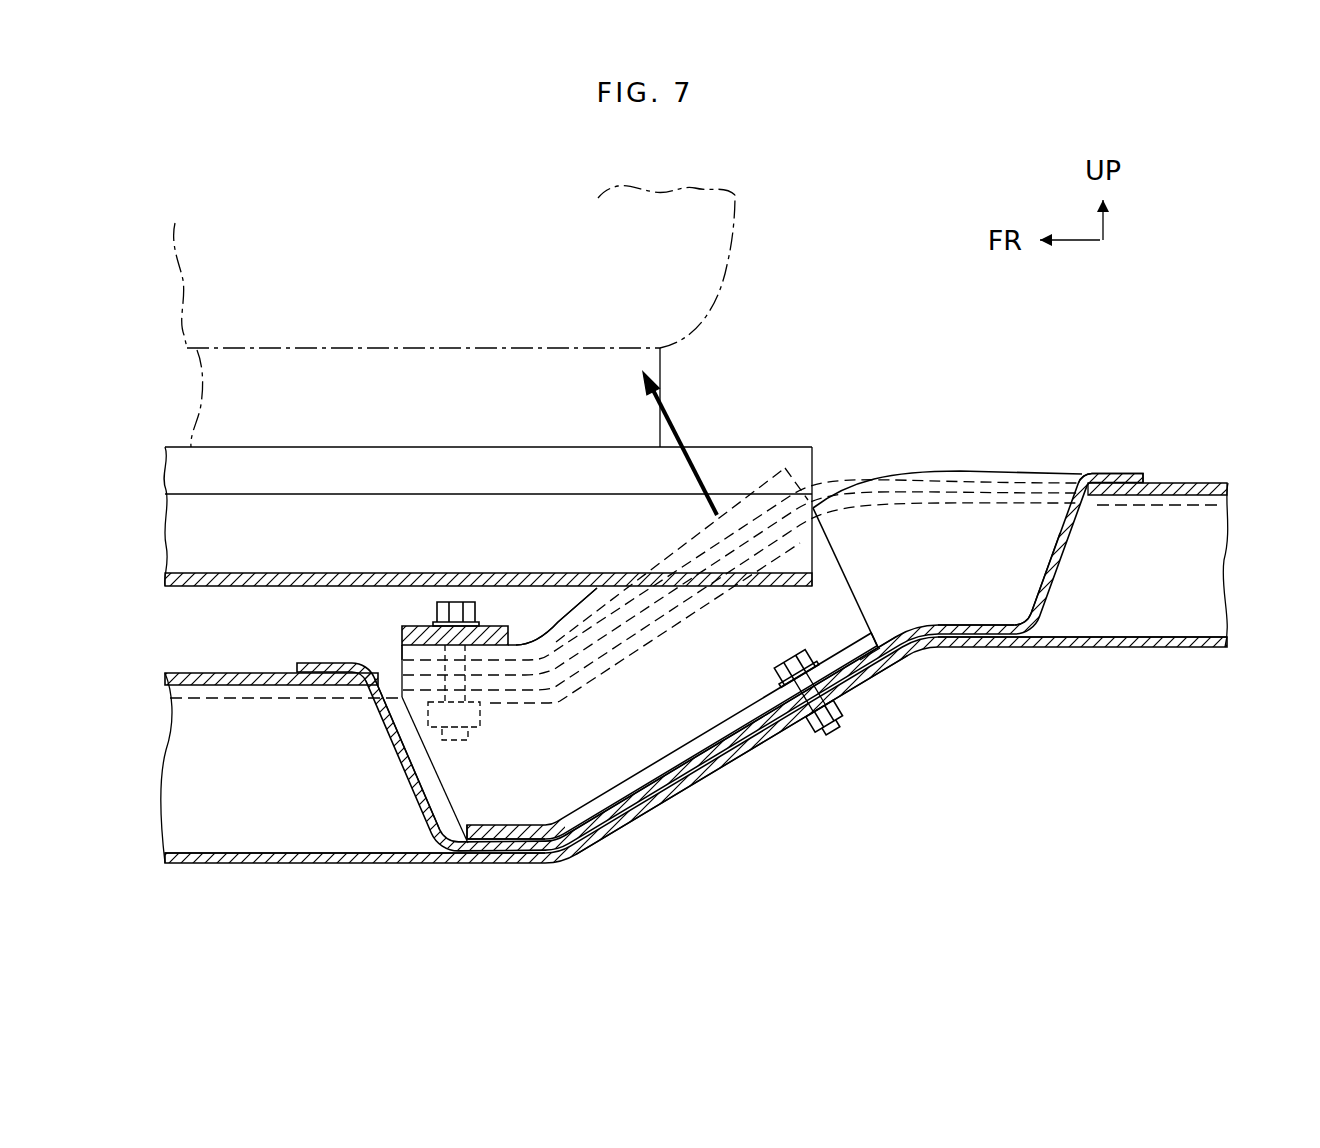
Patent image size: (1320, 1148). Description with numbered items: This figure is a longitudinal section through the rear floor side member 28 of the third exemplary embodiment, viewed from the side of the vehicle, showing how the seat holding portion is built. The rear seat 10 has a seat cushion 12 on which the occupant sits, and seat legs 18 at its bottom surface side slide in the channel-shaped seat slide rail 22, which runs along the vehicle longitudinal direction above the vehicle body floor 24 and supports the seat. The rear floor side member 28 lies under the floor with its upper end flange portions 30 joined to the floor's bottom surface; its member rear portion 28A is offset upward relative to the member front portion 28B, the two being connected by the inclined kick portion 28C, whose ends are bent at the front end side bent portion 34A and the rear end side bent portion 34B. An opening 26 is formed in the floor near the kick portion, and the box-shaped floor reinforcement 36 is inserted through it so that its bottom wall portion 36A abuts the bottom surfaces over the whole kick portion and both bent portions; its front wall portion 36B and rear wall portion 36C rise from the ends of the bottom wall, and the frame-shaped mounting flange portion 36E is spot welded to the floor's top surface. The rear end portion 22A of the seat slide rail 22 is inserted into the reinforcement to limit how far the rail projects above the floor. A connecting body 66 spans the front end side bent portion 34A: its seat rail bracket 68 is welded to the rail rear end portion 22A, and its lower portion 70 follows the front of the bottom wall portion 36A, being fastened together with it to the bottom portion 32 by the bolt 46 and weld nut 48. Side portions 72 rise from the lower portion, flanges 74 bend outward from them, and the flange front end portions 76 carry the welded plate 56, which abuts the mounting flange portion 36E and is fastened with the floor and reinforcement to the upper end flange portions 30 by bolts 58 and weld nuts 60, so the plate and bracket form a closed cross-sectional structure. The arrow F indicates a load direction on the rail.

The rear seat 10 is at (760, 247).
The seat cushion 12 is at (735, 265).
The seat leg 18 is at (660, 370).
The seat slide rail 22 is at (511, 446).
The rear end portion of seat slide rail 22A is at (735, 550).
The vehicle body floor 24 is at (1178, 468).
The opening 26 is at (1075, 474).
The rear floor side member 28 is at (1115, 650).
The member rear portion 28A is at (1158, 648).
The member front portion 28B is at (338, 864).
The kick portion 28C is at (692, 795).
The upper end flange portion 30 is at (575, 698).
The bottom portion 32 is at (870, 668).
The front end side bent portion 34A is at (556, 853).
The rear end side bent portion 34B is at (940, 653).
The floor reinforcement 36 is at (1072, 555).
The bottom wall portion 36A is at (762, 748).
The front wall portion 36B is at (398, 768).
The rear wall portion 36C is at (1052, 600).
The mounting flange portion 36E is at (1120, 472).
The bolt 46 is at (775, 664).
The weld nut 48 is at (852, 745).
The plate 56 is at (403, 630).
The bolt 58 is at (450, 601).
The weld nut 60 is at (480, 725).
The connecting body 66 is at (863, 558).
The seat rail bracket 68 is at (868, 610).
The lower portion 70 is at (678, 752).
The side portion 72 is at (470, 767).
The flange 74 is at (543, 625).
The flange front end portion 76 is at (402, 650).
The load direction F is at (660, 425).